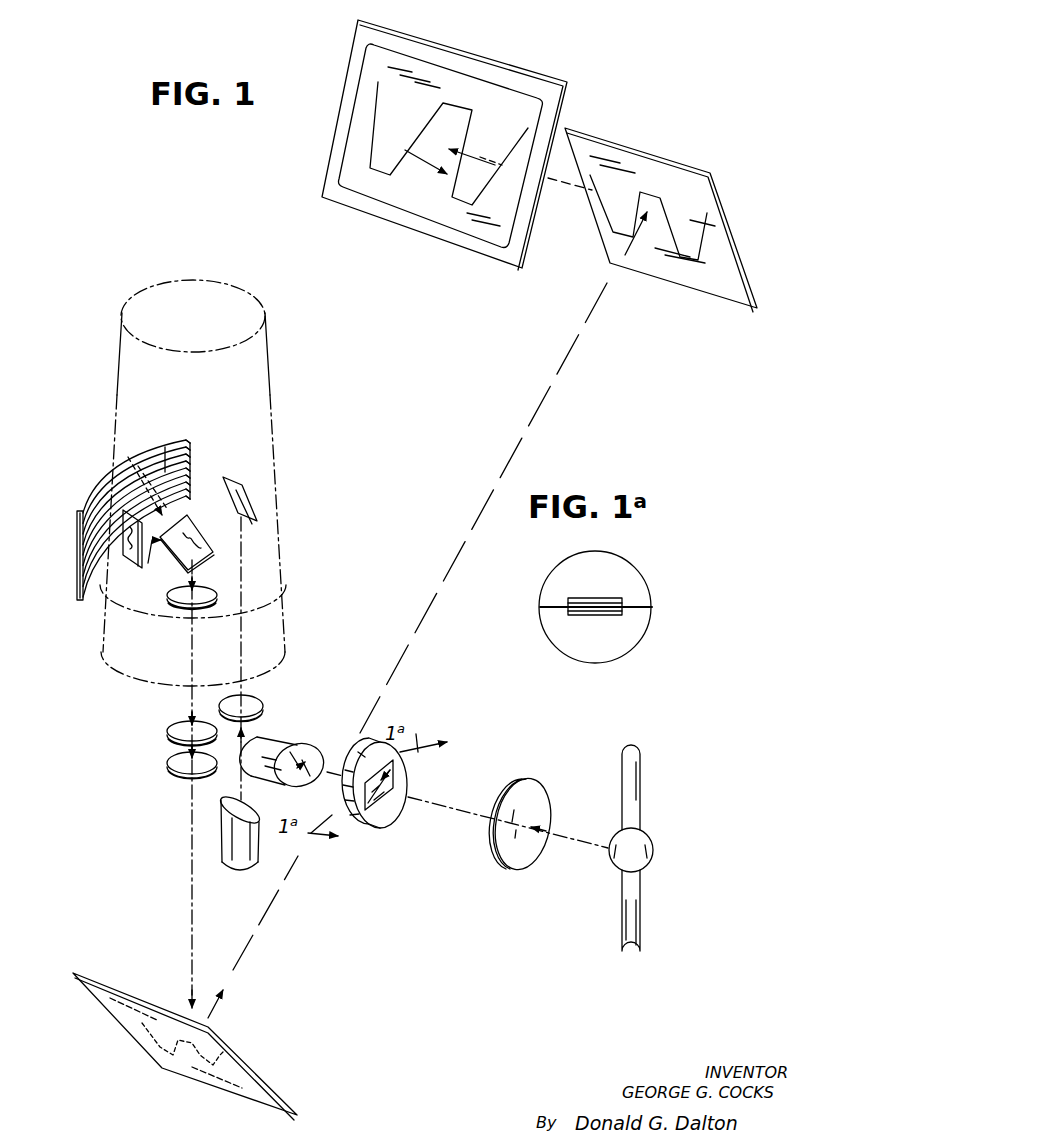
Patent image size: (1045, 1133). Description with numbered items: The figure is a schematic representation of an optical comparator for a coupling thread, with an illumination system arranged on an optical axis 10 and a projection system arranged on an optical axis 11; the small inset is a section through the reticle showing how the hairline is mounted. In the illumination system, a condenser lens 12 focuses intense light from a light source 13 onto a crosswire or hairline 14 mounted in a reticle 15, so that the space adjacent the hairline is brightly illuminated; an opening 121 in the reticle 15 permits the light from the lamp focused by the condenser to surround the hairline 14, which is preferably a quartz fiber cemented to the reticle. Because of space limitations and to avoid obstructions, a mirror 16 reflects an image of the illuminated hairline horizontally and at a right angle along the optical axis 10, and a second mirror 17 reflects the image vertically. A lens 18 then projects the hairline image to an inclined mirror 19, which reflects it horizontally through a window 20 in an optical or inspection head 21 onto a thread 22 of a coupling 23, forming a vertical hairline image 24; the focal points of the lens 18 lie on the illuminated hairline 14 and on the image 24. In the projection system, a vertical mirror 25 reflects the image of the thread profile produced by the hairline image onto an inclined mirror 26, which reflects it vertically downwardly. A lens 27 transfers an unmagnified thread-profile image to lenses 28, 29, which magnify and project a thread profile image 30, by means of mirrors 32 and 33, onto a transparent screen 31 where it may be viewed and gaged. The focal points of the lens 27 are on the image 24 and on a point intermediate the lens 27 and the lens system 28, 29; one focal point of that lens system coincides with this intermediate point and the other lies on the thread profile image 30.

In FIG. 1, the optical axis 10 is at (198, 495).
In FIG. 1, the optical axis 11 is at (560, 184).
In FIG. 1, the condenser lens 12 is at (542, 788).
In FIG. 1, the light source 13 is at (652, 848).
In FIG. 1A, the hairline 14 is at (600, 614).
In FIG. 1, the reticle 15 is at (378, 823).
In FIG. 1A, the reticle 15 is at (630, 570).
In FIG. 1, the mirror 16 is at (300, 746).
In FIG. 1, the second mirror 17 is at (235, 795).
In FIG. 1, the lens 18 is at (256, 705).
In FIG. 1, the inclined mirror 19 is at (252, 490).
In FIG. 1, the window 20 is at (132, 457).
In FIG. 1, the inspection head 21 is at (268, 352).
In FIG. 1, the thread 22 is at (193, 475).
In FIG. 1, the coupling 23 is at (78, 562).
In FIG. 1, the vertical hairline image 24 is at (165, 447).
In FIG. 1, the vertical mirror 25 is at (130, 563).
In FIG. 1, the inclined mirror 26 is at (203, 553).
In FIG. 1, the lens 27 is at (176, 608).
In FIG. 1, the lens 28 is at (170, 728).
In FIG. 1, the lens 29 is at (168, 765).
In FIG. 1, the thread profile image 30 is at (425, 130).
In FIG. 1, the transparent screen 31 is at (367, 90).
In FIG. 1, the mirror 32 is at (257, 1068).
In FIG. 1, the mirror 33 is at (710, 202).
In FIG. 1A, the opening 121 is at (578, 597).